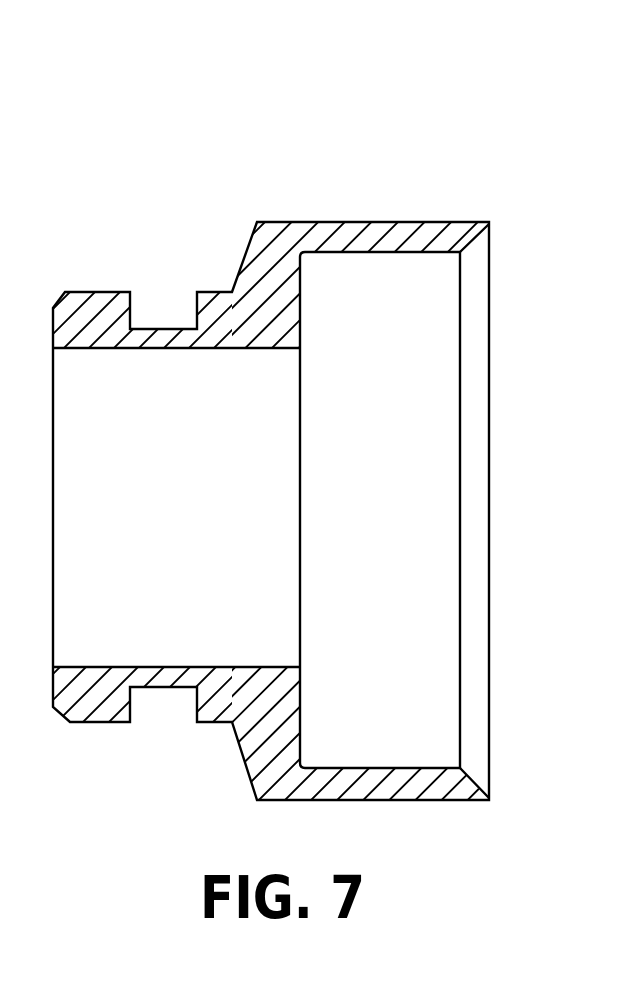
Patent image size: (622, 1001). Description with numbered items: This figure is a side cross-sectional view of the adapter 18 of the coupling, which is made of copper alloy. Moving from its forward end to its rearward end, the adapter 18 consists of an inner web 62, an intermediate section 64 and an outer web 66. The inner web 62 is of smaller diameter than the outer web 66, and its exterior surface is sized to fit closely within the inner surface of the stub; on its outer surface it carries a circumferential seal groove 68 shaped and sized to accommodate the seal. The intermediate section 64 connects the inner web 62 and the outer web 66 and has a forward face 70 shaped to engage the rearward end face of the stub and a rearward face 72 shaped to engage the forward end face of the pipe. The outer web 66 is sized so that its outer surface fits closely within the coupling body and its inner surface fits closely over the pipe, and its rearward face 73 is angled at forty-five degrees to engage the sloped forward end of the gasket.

The adapter 18 is at (468, 101).
The inner web 62 is at (90, 313).
The intermediate section 64 is at (253, 305).
The outer web 66 is at (362, 240).
The circumferential seal groove 68 is at (160, 315).
The forward face 70 is at (247, 256).
The rearward face 72 is at (300, 285).
The rearward face of the outer web 73 is at (489, 245).